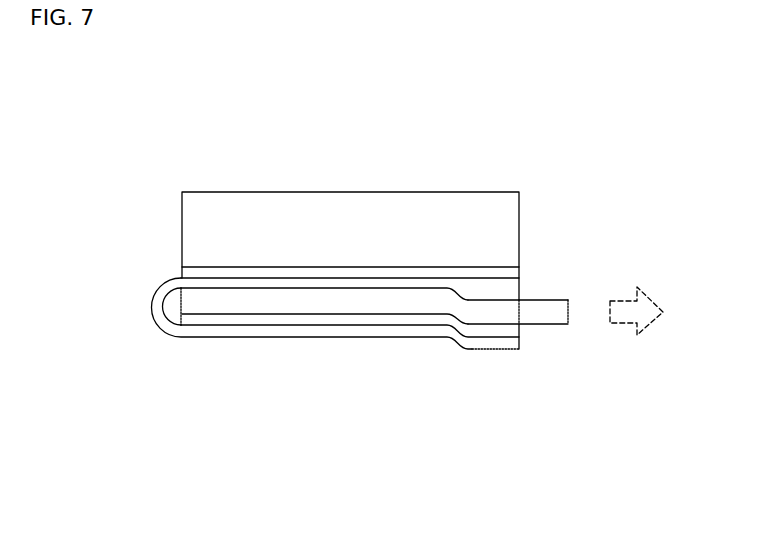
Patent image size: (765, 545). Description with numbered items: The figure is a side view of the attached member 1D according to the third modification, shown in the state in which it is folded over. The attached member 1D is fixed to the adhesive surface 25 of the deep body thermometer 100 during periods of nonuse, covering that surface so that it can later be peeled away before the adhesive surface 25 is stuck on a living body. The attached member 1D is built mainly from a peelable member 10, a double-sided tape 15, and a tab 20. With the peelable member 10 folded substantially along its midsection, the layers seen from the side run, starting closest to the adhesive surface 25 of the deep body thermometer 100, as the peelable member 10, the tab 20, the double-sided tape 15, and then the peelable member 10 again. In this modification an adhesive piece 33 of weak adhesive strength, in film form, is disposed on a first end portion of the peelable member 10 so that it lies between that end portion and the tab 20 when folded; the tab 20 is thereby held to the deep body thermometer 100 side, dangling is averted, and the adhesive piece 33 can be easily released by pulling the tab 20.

The deep body thermometer 100 is at (363, 203).
The attached member 1D is at (143, 290).
The peelable member 10 is at (319, 332).
The double-sided tape 15 is at (406, 322).
The tab 20 is at (478, 310).
The adhesive surface 25 is at (238, 273).
The adhesive piece 33 is at (492, 293).